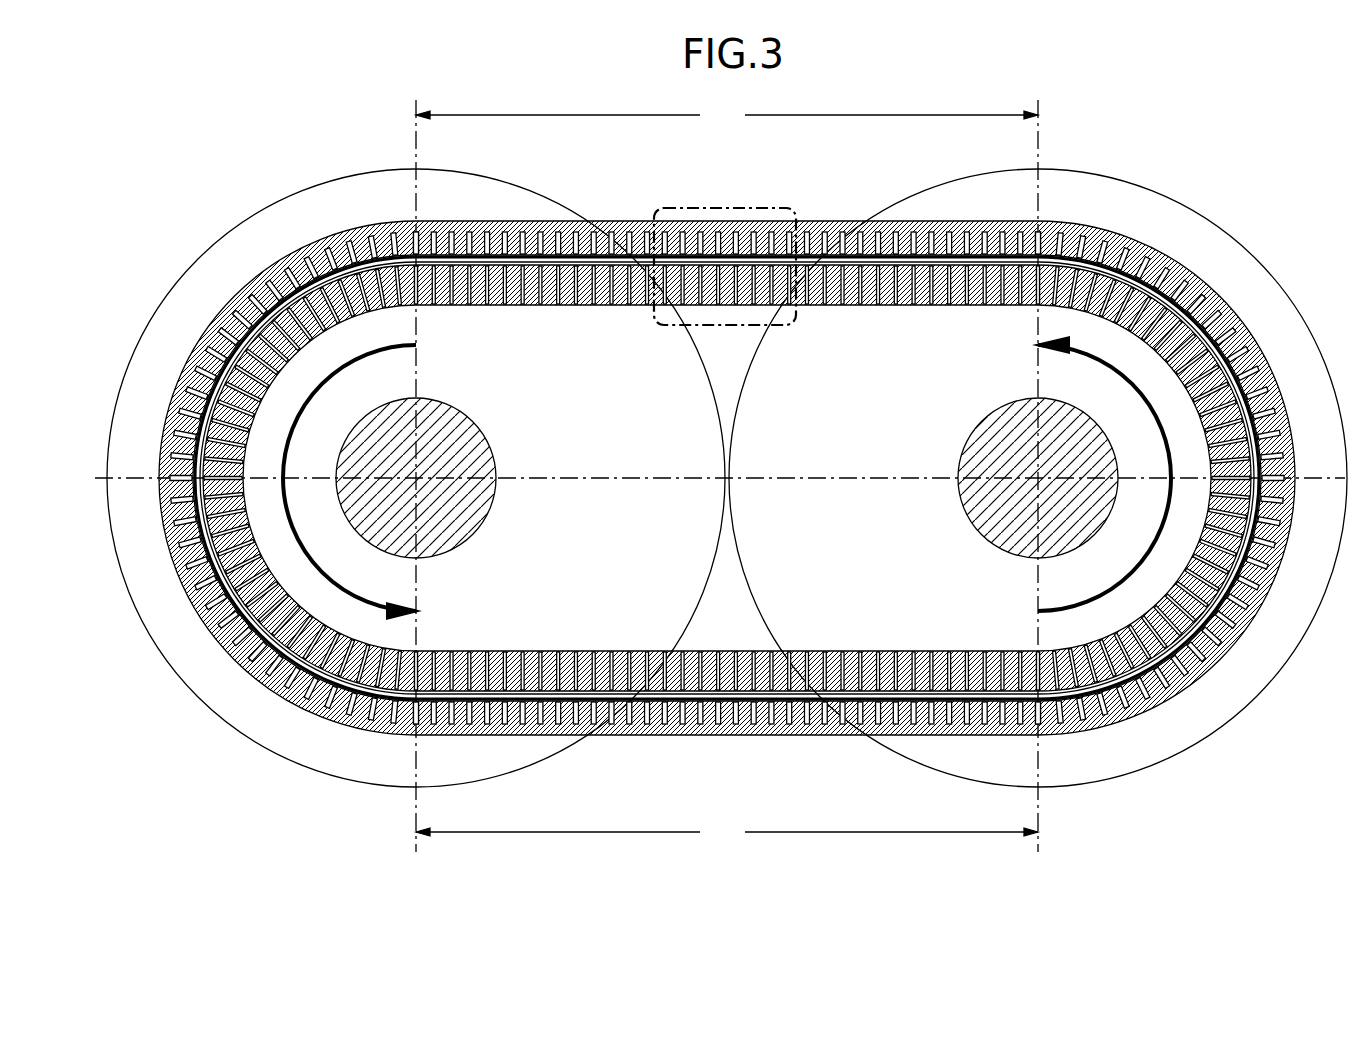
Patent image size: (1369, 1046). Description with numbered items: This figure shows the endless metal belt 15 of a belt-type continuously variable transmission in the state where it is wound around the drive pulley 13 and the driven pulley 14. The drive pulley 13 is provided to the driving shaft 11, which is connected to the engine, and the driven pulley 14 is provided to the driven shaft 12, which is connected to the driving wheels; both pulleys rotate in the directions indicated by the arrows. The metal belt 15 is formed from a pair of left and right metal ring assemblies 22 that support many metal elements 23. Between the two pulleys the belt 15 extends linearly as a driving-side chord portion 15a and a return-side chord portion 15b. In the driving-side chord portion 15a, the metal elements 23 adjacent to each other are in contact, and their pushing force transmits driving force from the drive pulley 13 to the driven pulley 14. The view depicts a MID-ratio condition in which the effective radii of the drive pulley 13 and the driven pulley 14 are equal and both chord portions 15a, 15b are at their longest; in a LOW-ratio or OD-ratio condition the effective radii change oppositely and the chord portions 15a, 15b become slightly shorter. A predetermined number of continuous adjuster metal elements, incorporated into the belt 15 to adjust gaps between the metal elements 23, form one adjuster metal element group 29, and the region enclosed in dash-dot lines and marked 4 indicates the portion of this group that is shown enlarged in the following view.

The enlarged detail region (FIG. 4) 4 is at (680, 210).
The driving shaft 11 is at (991, 425).
The driven shaft 12 is at (462, 425).
The drive pulley 13 is at (1108, 193).
The driven pulley 14 is at (283, 222).
The metal belt 15 is at (734, 448).
The driving-side chord portion 15a is at (727, 117).
The return-side chord portion 15b is at (727, 833).
The metal ring assembly 22 is at (1138, 282).
The metal element 23 is at (607, 222).
The adjuster metal element group 29 is at (736, 222).